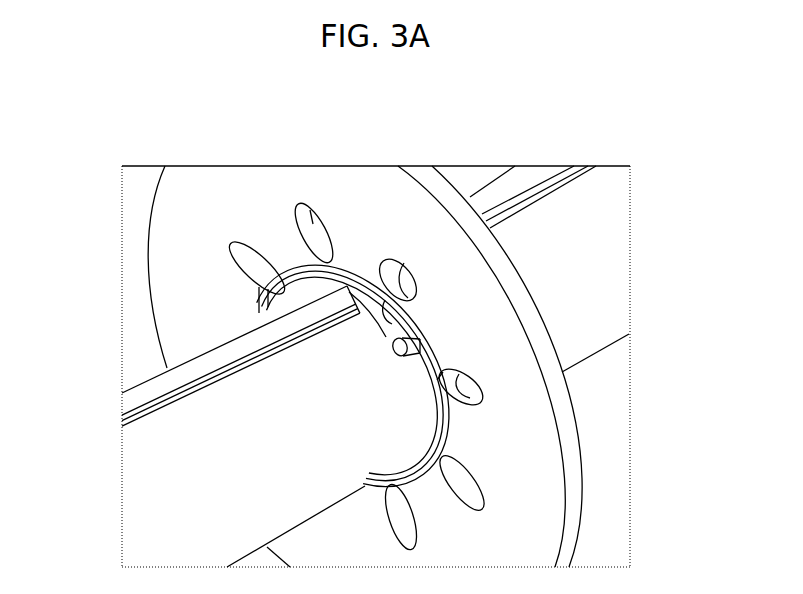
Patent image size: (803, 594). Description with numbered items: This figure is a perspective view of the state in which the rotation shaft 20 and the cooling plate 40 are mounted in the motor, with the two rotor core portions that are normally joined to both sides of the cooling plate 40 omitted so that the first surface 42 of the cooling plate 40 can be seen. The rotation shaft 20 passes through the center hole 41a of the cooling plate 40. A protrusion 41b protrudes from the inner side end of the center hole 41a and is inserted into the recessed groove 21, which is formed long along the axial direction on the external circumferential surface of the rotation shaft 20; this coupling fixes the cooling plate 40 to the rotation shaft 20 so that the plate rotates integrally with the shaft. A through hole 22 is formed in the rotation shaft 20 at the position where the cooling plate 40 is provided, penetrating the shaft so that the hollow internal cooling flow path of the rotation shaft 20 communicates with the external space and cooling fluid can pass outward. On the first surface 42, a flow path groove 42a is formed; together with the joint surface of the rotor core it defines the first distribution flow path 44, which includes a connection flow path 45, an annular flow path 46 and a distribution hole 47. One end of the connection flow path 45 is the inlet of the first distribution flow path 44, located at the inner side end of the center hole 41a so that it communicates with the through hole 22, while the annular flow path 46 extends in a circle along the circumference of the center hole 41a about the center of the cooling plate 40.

The rotation shaft 20 is at (188, 340).
The recessed groove 21 is at (157, 410).
The through hole 22 is at (424, 345).
The cooling plate 40 is at (590, 394).
The center hole 41a is at (402, 330).
The protrusion 41b is at (333, 307).
The first surface 42 is at (153, 270).
The flow path groove 42a is at (352, 334).
The first distribution flow path 44 is at (400, 112).
The connection flow path 45 is at (322, 242).
The annular flow path 46 is at (278, 253).
The distribution hole 47 is at (310, 206).